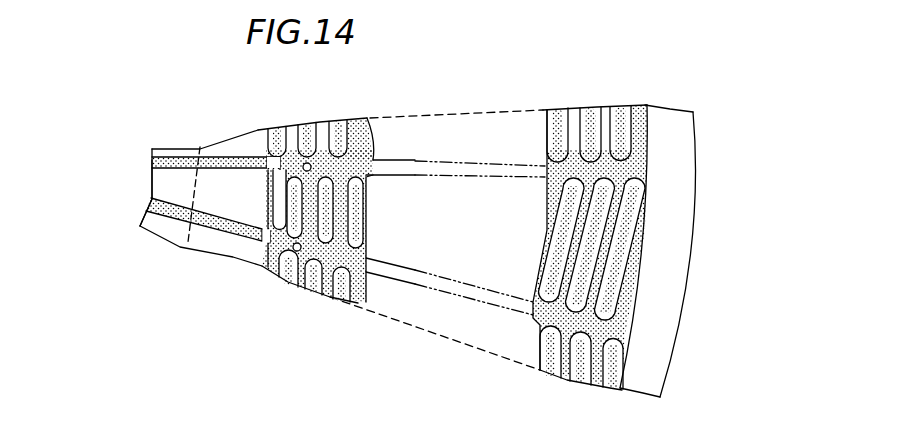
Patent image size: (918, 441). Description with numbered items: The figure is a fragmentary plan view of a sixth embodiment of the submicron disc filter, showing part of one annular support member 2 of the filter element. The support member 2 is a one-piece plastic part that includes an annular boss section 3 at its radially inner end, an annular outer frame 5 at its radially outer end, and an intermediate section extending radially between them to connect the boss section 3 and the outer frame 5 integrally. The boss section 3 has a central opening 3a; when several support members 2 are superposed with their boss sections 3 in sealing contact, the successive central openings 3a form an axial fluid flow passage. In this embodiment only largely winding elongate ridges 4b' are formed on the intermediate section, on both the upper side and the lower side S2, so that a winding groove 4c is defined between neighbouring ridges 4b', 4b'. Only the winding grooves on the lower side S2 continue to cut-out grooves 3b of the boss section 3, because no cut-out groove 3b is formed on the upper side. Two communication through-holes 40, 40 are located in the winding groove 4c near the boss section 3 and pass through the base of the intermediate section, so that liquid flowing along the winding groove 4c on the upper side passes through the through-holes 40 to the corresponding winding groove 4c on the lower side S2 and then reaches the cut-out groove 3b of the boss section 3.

The support member 2 is at (429, 106).
The boss section 3 is at (176, 148).
The central opening 3a is at (142, 186).
The cut-out groove 3b is at (200, 148).
The largely winding elongate ridge 4b' is at (639, 231).
The winding groove 4c is at (366, 125).
The outer frame 5 is at (660, 104).
The communication through-hole 40 is at (268, 157).
The lower side S2 is at (481, 124).